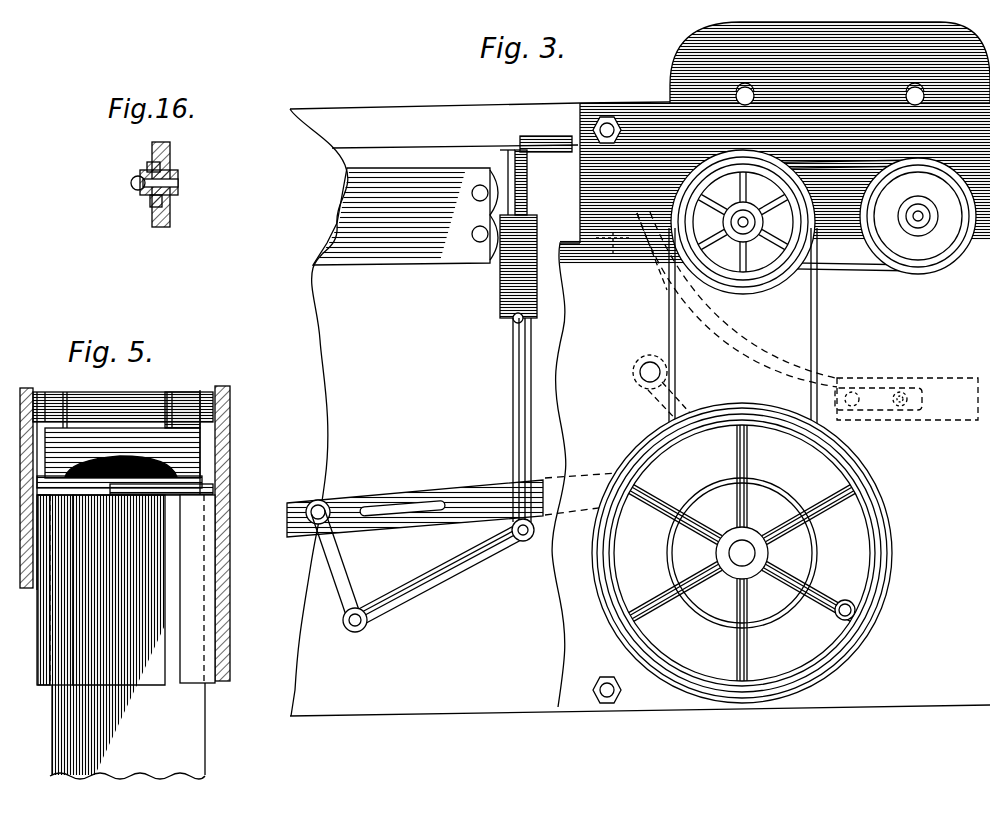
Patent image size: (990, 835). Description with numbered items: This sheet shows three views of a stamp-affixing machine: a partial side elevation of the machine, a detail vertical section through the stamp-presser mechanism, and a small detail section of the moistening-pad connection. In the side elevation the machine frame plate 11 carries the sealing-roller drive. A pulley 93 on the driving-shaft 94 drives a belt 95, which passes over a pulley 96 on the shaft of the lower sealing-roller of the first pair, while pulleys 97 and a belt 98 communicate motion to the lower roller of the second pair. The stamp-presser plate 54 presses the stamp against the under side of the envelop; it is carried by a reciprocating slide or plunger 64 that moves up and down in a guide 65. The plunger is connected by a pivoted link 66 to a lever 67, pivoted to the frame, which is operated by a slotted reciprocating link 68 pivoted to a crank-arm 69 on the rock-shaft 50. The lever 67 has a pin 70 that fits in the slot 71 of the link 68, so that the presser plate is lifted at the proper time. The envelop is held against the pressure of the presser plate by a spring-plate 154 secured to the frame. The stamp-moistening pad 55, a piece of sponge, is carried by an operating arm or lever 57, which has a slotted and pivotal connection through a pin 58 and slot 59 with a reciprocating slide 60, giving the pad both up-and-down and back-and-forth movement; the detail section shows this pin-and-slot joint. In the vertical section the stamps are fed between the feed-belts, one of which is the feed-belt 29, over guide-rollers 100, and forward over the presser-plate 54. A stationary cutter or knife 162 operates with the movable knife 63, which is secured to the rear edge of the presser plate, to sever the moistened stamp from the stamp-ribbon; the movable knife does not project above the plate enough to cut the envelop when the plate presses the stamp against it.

In FIG. 3, the frame plate 11 is at (946, 55).
In FIG. 5, the feed-belt 29 is at (104, 416).
In FIG. 3, the rock-shaft 50 is at (645, 363).
In FIG. 5, the stamp-presser plate 54 is at (198, 489).
In FIG. 3, the stamp-presser plate 54 is at (541, 153).
In FIG. 3, the stamp-moistening pad 55 is at (611, 256).
In FIG. 3, the operating arm or lever 57 is at (738, 299).
In FIG. 16, the pin 58 is at (134, 190).
In FIG. 16, the slot 59 is at (170, 176).
In FIG. 16, the reciprocating slide 60 is at (153, 205).
In FIG. 3, the reciprocating slide 60 is at (953, 373).
In FIG. 5, the movable knife or cutter 63 is at (185, 472).
In FIG. 3, the movable knife or cutter 63 is at (514, 164).
In FIG. 5, the reciprocating slide or plunger 64 is at (190, 726).
In FIG. 3, the reciprocating slide or plunger 64 is at (527, 214).
In FIG. 5, the guide 65 is at (188, 603).
In FIG. 3, the guide 65 is at (539, 236).
In FIG. 3, the pivoted link 66 is at (528, 430).
In FIG. 3, the lever 67 is at (341, 556).
In FIG. 3, the slotted reciprocating link 68 is at (415, 504).
In FIG. 3, the crank-arm 69 is at (655, 394).
In FIG. 3, the pin 70 is at (326, 506).
In FIG. 3, the slot 71 is at (392, 506).
In FIG. 3, the pulley 93 is at (762, 608).
In FIG. 3, the driving-shaft 94 is at (742, 553).
In FIG. 3, the belt 95 is at (819, 337).
In FIG. 3, the pulley 96 is at (754, 290).
In FIG. 3, the pulley 97 is at (792, 224).
In FIG. 3, the belt 98 is at (831, 231).
In FIG. 5, the guide-roller 100 is at (195, 390).
In FIG. 3, the guide-roller 100 is at (478, 216).
In FIG. 3, the spring-plate 154 is at (455, 133).
In FIG. 5, the stationary cutter or knife 162 is at (182, 460).